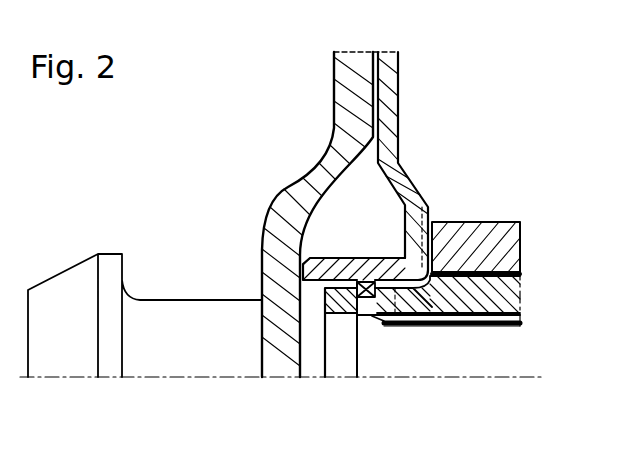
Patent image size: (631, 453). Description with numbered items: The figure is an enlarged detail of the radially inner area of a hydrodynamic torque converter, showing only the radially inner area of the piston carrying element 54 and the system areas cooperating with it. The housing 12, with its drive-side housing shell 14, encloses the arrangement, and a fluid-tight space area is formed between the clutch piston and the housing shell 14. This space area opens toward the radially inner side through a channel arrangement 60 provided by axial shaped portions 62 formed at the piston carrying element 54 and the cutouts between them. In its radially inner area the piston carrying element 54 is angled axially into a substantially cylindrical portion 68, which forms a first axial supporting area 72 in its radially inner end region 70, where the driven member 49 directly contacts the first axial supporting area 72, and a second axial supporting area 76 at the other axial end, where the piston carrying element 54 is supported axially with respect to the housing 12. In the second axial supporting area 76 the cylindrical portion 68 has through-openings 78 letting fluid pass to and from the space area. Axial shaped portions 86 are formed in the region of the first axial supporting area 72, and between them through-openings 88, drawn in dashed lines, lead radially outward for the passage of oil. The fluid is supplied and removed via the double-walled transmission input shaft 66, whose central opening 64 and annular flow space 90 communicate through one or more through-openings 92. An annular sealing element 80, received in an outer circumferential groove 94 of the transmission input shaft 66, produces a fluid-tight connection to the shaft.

The housing 12 is at (347, 48).
The housing shell 14 is at (340, 62).
The driven member 49 is at (498, 235).
The piston carrying element 54 is at (398, 75).
The channel arrangement 60 is at (373, 137).
The axial shaped portions 62 is at (373, 90).
The central opening 64 is at (488, 348).
The transmission input shaft 66 is at (500, 300).
The substantially cylindrical portion 68 is at (325, 290).
The radially inner end region 70 is at (377, 252).
The first axial supporting area 72 is at (433, 217).
The second axial supporting area 76 is at (270, 330).
The through-openings 78 is at (303, 266).
The annular sealing element 80 is at (380, 326).
The axial shaped portions 86 is at (415, 232).
The through-openings 88 is at (433, 242).
The annular flow space 90 is at (505, 318).
The through-openings 92 is at (433, 328).
The outer circumferential groove 94 is at (357, 297).